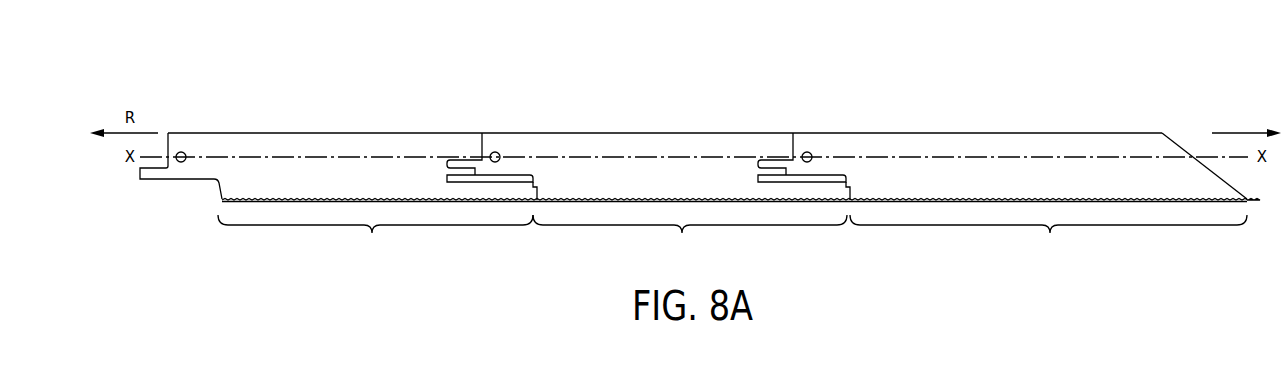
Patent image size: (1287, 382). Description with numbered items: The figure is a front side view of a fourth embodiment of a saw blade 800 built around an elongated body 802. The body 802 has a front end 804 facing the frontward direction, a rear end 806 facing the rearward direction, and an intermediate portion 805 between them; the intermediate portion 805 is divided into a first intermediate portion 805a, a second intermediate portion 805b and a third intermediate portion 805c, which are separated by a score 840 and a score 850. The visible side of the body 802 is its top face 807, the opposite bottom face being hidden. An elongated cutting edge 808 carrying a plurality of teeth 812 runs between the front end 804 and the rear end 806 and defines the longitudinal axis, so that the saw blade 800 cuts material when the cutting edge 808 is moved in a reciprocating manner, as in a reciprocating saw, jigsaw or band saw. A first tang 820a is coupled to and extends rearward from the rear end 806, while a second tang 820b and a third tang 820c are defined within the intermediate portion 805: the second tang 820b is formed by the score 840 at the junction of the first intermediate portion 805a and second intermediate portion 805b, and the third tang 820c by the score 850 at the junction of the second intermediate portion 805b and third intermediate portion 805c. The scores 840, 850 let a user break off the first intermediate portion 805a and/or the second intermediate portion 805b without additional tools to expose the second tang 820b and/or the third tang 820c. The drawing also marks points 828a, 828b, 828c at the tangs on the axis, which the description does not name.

The saw blade 800 is at (689, 150).
The elongated body 802 is at (667, 118).
The front end 804 is at (1190, 126).
The intermediate portion 805 is at (689, 170).
The first intermediate portion 805a is at (375, 239).
The second intermediate portion 805b is at (690, 238).
The third intermediate portion 805c is at (1048, 238).
The rear end 806 is at (212, 190).
The top face 807 is at (1005, 142).
The cutting edge 808 is at (1035, 202).
The teeth 812 is at (972, 202).
The first tang 820a is at (150, 193).
The second tang 820b is at (492, 203).
The third tang 820c is at (801, 203).
The first pivot point 828a is at (184, 152).
The second pivot point 828b is at (498, 152).
The third pivot point 828c is at (810, 152).
The score 840 is at (480, 158).
The score 850 is at (795, 158).